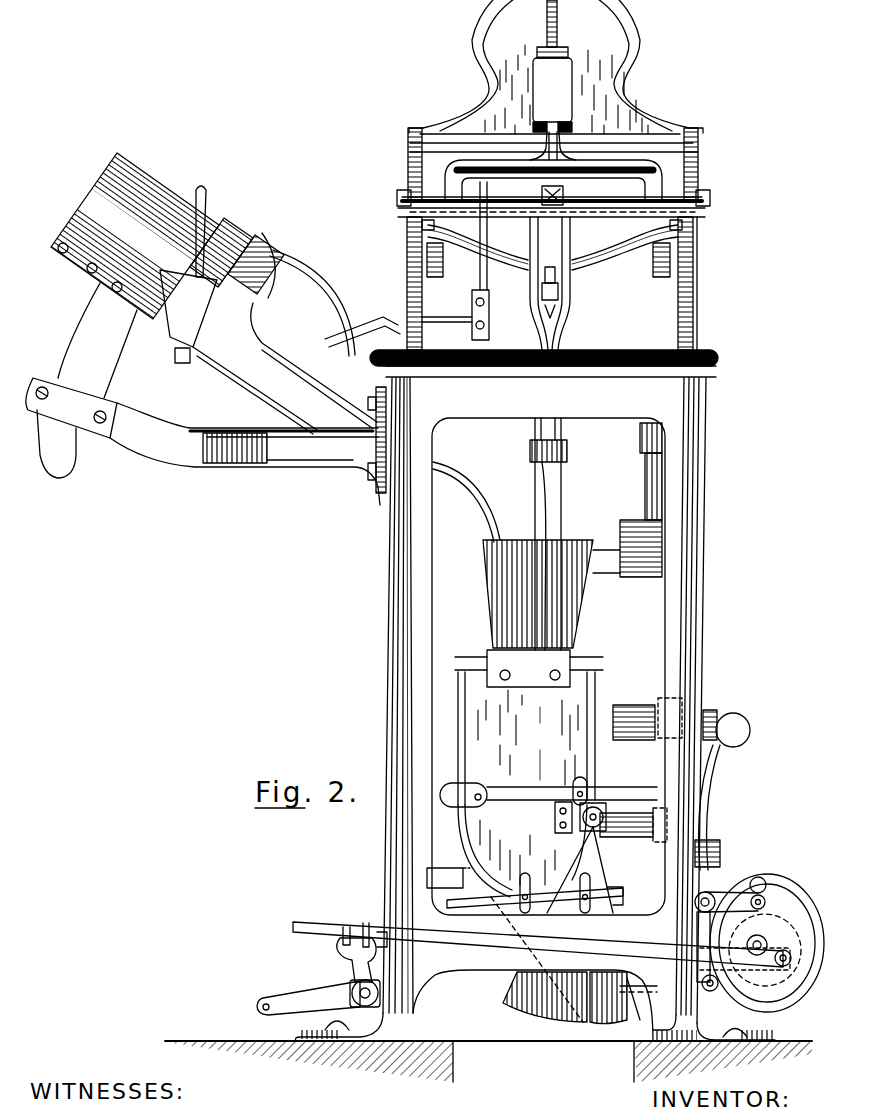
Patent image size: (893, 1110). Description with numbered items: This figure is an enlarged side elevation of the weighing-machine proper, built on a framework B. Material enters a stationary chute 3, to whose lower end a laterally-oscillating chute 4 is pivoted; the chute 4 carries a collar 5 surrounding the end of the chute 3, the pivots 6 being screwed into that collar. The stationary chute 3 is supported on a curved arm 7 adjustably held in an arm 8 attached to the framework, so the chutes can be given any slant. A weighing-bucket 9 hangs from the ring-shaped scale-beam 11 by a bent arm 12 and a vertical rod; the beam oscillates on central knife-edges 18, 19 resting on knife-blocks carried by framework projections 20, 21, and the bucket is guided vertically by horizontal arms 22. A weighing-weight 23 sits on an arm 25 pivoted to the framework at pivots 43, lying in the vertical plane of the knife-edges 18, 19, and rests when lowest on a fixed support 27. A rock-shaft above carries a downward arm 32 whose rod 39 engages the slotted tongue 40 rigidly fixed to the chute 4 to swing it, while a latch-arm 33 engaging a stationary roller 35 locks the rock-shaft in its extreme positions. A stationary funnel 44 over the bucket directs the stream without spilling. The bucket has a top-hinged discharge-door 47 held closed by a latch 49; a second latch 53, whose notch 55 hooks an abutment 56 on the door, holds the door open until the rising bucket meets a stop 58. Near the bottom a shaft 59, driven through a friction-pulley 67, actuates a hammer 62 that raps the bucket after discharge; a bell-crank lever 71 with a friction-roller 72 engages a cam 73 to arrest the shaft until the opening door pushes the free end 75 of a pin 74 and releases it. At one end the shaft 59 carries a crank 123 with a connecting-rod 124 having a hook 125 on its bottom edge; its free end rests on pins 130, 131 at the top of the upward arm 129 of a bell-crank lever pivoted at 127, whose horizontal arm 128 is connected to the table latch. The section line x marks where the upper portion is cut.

The framework of the weighing-machine B is at (400, 556).
The stationary chute 3 is at (160, 185).
The laterally-oscillating chute 4 is at (270, 360).
The collar 5 is at (236, 232).
The pivots 6 is at (278, 238).
The curved arm 7 is at (100, 360).
The arm 8 is at (178, 366).
The weighing-bucket 9 is at (526, 784).
The section line x is at (537, 743).
The scale-beam 11 is at (612, 254).
The bent arm 12 is at (548, 522).
The knife-edge 18 is at (428, 246).
The knife-edge 19 is at (672, 246).
The projection 20 is at (444, 264).
The projection 21 is at (660, 278).
The horizontal arm 22 is at (523, 792).
The weighing-weight 23 is at (556, 94).
The arm 25 is at (660, 172).
The fixed support 27 is at (598, 186).
The arm 32 is at (484, 294).
The latch-arm 33 is at (558, 276).
The stationary roller 35 is at (560, 297).
The rod 39 is at (360, 330).
The tongue 40 is at (315, 278).
The pivots 43 is at (444, 201).
The stationary funnel 44 is at (618, 620).
The discharge-door 47 is at (545, 997).
The latch 49 is at (608, 998).
The latch 53 is at (530, 890).
The notch 55 is at (625, 903).
The abutment 56 is at (590, 880).
The stop 58 is at (445, 870).
The shaft 59 is at (760, 935).
The hammer 62 is at (630, 702).
The friction-pulley 67 is at (768, 893).
The bell-crank lever 71 is at (720, 890).
The friction-roller 72 is at (758, 880).
The cam 73 is at (780, 987).
The pin 74 is at (639, 999).
The free end 75 is at (620, 984).
The crank 123 is at (755, 946).
The connecting-rod 124 is at (655, 942).
The hook 125 is at (387, 940).
The pivot 127 is at (376, 996).
The horizontal arm 128 is at (292, 998).
The arm 129 is at (352, 961).
The pin 130 is at (345, 927).
The pin 131 is at (366, 924).